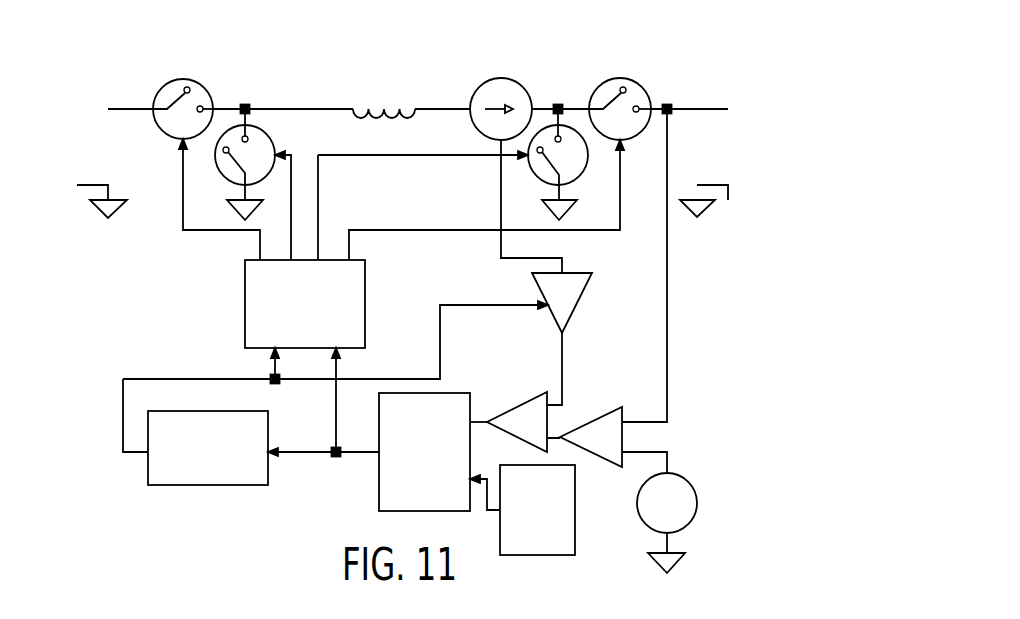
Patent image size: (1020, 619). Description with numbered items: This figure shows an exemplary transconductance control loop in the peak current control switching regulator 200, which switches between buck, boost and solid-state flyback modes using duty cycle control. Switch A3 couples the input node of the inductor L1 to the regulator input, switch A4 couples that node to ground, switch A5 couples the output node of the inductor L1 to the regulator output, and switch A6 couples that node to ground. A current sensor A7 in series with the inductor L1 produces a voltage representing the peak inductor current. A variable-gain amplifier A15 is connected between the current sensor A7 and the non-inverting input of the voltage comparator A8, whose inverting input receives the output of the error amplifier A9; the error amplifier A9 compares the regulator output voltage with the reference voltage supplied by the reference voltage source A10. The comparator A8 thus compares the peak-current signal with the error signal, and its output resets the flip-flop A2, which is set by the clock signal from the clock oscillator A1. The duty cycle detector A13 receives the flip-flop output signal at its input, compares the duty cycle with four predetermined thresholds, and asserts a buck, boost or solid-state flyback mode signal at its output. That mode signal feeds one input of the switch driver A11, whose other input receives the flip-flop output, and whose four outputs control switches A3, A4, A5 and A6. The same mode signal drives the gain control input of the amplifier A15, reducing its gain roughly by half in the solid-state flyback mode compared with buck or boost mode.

The peak current control switching regulator 200 is at (566, 54).
The clock oscillator A1 is at (537, 510).
The flip-flop A2 is at (439, 452).
The switch A3 is at (206, 169).
The switch A4 is at (253, 186).
The switch A5 is at (453, 186).
The switch A6 is at (500, 169).
The current sensor A7 is at (516, 175).
The voltage comparator A8 is at (524, 422).
The error amplifier A9 is at (591, 437).
The reference voltage source A10 is at (667, 523).
The switch driver A11 is at (305, 356).
The duty cycle detector A13 is at (263, 448).
The variable-gain amplifier A15 is at (562, 339).
The inductor L1 is at (384, 97).